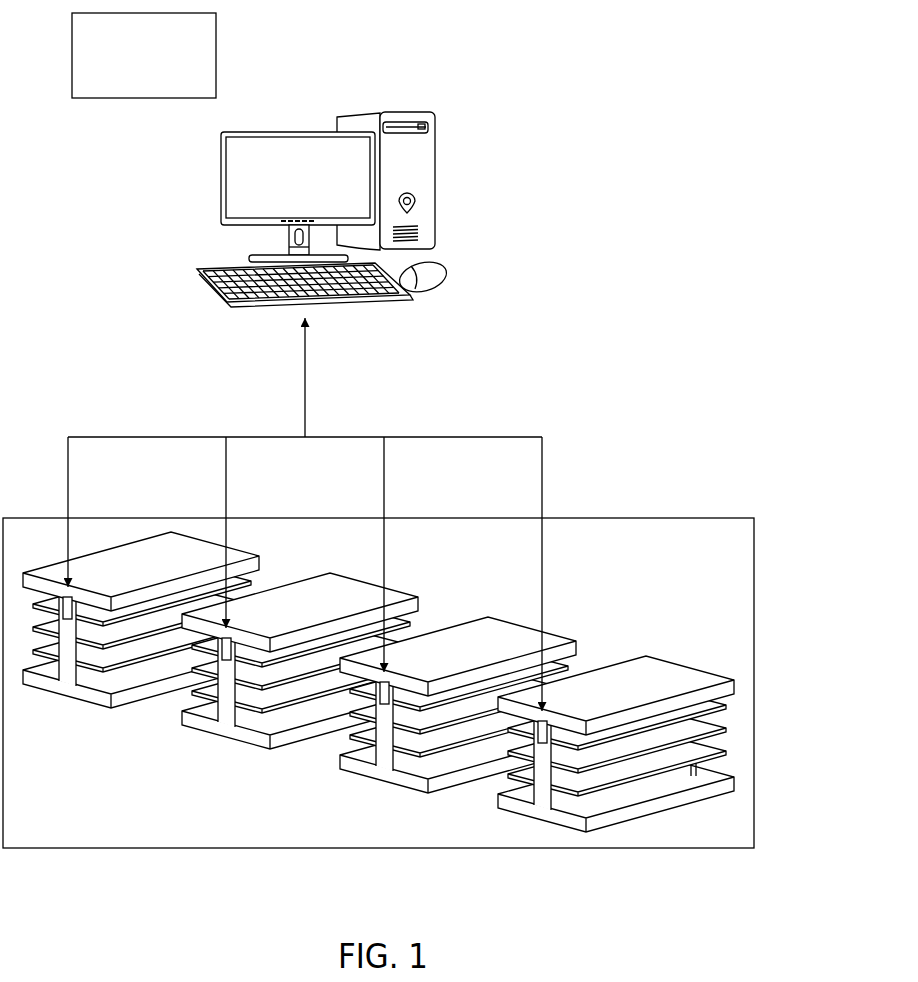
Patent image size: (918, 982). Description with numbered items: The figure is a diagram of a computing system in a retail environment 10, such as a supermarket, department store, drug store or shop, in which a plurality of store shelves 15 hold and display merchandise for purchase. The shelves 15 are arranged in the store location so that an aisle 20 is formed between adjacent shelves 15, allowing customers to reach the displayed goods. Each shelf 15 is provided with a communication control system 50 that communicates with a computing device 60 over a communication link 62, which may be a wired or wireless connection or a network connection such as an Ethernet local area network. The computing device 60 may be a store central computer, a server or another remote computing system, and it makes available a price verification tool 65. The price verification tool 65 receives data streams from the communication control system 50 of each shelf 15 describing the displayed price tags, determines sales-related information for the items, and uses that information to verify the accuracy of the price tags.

The retail environment 10 is at (558, 92).
The store shelf 15 is at (378, 630).
The aisle 20 is at (378, 697).
The communication control system 50 is at (319, 656).
The computing device 60 is at (402, 112).
The communication link 62 is at (305, 367).
The price verification tool 65 is at (290, 145).